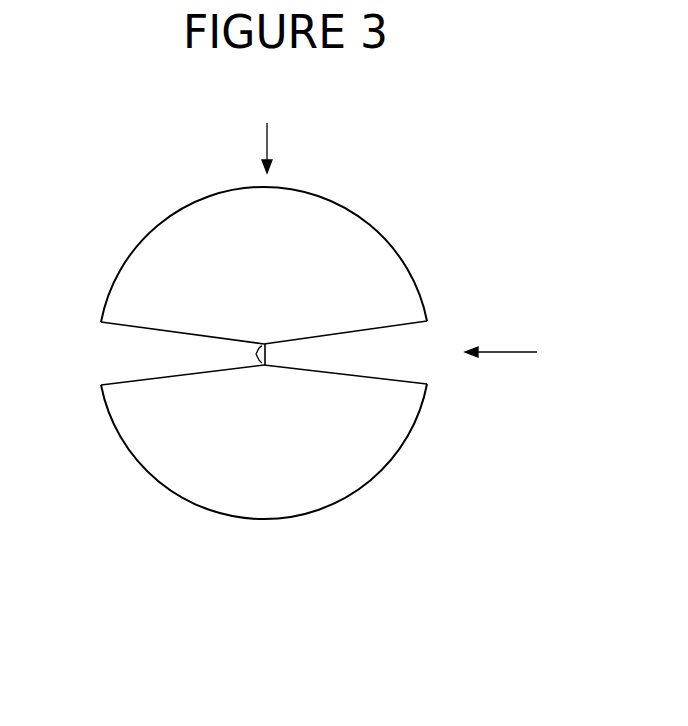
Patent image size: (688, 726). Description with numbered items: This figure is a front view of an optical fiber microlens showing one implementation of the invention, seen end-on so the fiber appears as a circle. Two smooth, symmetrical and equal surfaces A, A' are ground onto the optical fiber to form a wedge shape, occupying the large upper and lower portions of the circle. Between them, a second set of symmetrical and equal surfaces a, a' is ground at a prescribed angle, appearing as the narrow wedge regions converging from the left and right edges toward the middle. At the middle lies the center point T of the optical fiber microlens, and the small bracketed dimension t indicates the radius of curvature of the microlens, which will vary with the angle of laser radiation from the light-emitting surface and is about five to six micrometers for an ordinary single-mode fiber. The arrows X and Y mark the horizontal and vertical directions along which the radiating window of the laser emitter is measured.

The wedge surface A is at (264, 229).
The wedge surface A' is at (264, 472).
The second ground surface a is at (380, 344).
The second ground surface a' is at (151, 353).
The center point T is at (263, 342).
The radius of curvature t is at (254, 356).
The x axis X is at (509, 354).
The y axis Y is at (266, 136).